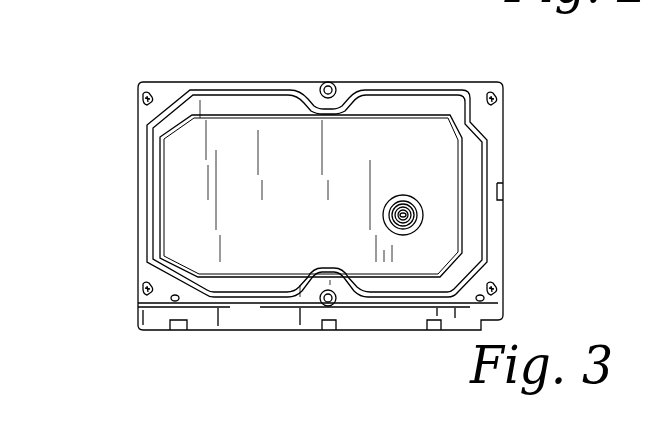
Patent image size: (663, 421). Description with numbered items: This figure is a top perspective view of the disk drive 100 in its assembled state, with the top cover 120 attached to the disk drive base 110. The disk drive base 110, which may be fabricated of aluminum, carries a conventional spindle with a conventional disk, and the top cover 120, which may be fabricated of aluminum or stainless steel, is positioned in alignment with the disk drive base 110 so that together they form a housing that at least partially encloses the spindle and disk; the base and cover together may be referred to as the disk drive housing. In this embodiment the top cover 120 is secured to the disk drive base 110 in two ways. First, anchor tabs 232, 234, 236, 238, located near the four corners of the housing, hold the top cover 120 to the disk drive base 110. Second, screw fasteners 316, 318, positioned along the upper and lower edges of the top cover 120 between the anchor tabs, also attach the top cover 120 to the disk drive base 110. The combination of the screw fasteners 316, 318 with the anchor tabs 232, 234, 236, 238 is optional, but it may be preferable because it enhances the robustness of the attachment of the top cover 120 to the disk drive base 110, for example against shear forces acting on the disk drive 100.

The disk drive 100 is at (206, 46).
The disk drive base 110 is at (246, 332).
The top cover 120 is at (244, 82).
The anchor tab 232 is at (500, 103).
The anchor tab 234 is at (500, 290).
The anchor tab 236 is at (142, 100).
The anchor tab 238 is at (142, 286).
The screw fastener 316 is at (329, 81).
The screw fastener 318 is at (335, 301).